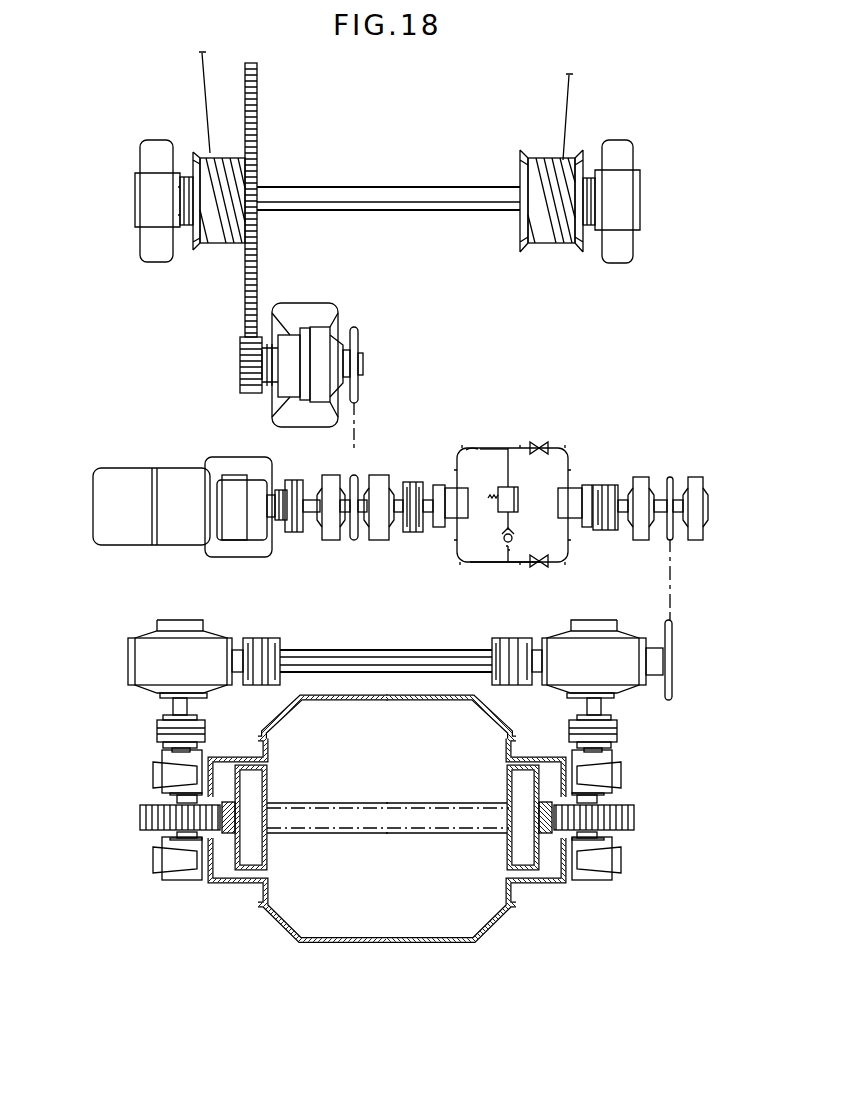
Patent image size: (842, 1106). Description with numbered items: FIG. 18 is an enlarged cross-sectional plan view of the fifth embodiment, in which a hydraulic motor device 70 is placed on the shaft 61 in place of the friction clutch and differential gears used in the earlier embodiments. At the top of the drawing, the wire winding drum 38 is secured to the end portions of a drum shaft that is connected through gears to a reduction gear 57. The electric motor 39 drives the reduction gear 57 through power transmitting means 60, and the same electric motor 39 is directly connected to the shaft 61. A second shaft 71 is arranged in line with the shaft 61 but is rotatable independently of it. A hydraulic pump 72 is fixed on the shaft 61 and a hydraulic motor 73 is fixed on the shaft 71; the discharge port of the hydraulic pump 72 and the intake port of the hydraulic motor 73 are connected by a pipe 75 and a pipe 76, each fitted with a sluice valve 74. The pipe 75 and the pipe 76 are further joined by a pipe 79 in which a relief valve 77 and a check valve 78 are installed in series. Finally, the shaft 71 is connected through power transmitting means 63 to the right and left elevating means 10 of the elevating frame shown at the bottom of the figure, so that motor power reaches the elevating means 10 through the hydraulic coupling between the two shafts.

The elevating means 10 is at (617, 668).
The wire winding drum 38 is at (527, 152).
The electric motor 39 is at (174, 477).
The reduction gear 57 is at (303, 313).
The power transmitting means 60 is at (356, 448).
The shaft 61 is at (382, 527).
The power transmitting means 63 is at (668, 566).
The hydraulic motor device 70 is at (500, 449).
The shaft 71 is at (635, 490).
The hydraulic pump 72 is at (455, 515).
The hydraulic motor 73 is at (572, 494).
The sluice valves 74 is at (545, 446).
The pipe 75 is at (490, 449).
The pipe 76 is at (482, 562).
The relief valve 77 is at (498, 493).
The check valve 78 is at (505, 546).
The pipe 79 is at (468, 448).